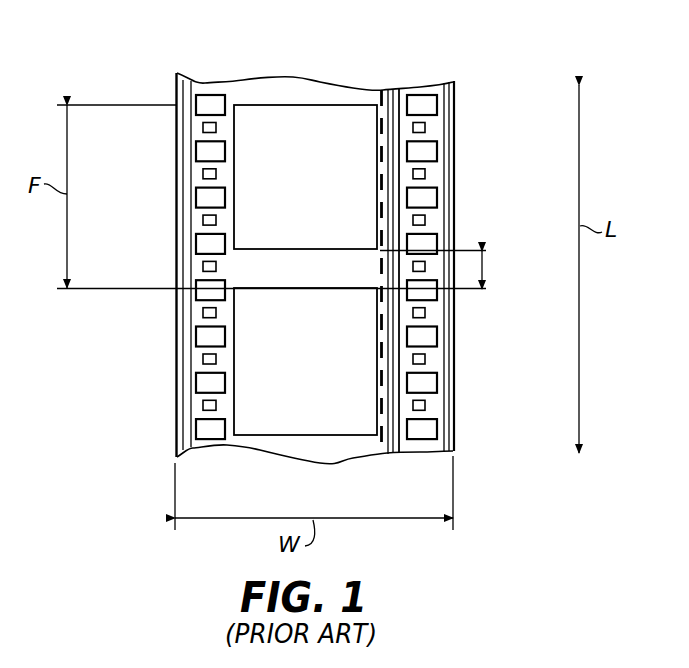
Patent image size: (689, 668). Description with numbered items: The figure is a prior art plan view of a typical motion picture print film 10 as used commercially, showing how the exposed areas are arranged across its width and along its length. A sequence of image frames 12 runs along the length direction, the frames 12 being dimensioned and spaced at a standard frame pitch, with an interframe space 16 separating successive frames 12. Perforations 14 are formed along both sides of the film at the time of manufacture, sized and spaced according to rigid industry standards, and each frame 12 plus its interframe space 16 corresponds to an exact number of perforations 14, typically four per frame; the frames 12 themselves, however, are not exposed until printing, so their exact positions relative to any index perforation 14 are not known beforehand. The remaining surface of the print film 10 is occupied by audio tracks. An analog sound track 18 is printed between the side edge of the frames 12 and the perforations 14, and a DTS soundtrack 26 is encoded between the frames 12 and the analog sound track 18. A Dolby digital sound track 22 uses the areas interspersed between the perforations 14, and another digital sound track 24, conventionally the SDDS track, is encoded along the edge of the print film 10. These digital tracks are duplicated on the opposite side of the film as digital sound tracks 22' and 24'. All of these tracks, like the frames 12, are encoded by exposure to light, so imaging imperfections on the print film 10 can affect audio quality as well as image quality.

The motion picture print film 10 is at (118, 50).
The frames 12 is at (286, 420).
The perforations 14 is at (211, 95).
The interframe space 16 is at (484, 268).
The analog sound track 18 is at (395, 90).
The Dolby digital sound track 22 is at (459, 267).
The duplicated Dolby digital sound track 22' is at (162, 267).
The digital sound track 24 is at (478, 266).
The duplicated digital sound track 24' is at (156, 265).
The DTS soundtrack 26 is at (381, 90).